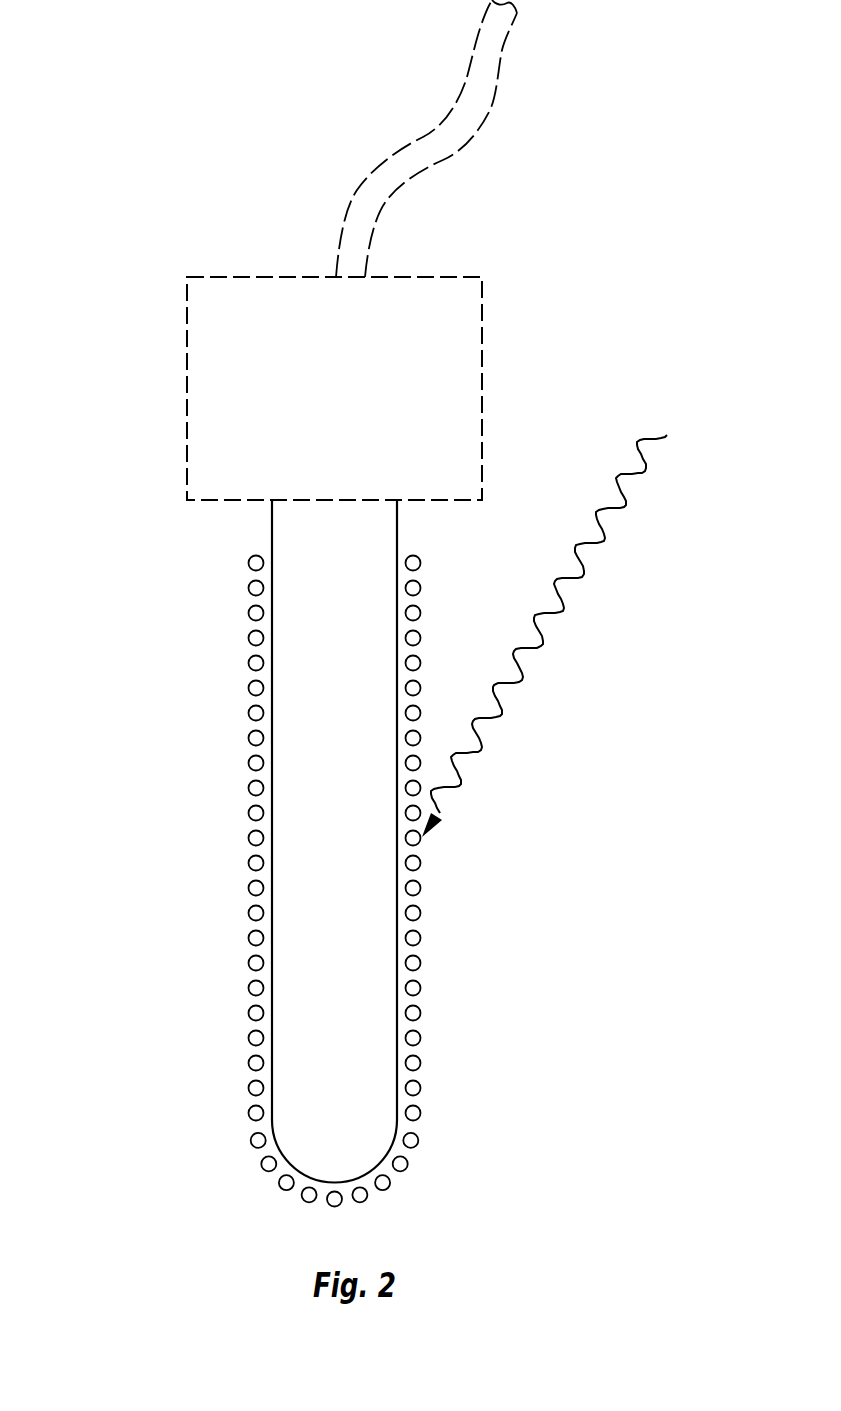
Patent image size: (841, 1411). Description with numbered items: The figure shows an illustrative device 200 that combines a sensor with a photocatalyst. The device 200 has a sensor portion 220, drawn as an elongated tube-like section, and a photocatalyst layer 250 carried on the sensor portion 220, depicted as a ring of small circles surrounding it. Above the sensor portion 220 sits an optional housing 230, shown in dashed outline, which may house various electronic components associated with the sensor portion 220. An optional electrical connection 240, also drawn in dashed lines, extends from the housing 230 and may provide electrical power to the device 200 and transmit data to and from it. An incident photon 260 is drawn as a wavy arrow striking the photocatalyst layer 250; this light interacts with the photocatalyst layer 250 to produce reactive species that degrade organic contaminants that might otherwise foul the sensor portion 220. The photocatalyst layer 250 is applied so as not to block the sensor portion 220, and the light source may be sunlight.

The device 200 is at (140, 128).
The sensor portion 220 is at (382, 525).
The housing 230 is at (470, 304).
The electrical connection 240 is at (485, 103).
The photocatalyst layer 250 is at (420, 913).
The incident photon 260 is at (605, 543).